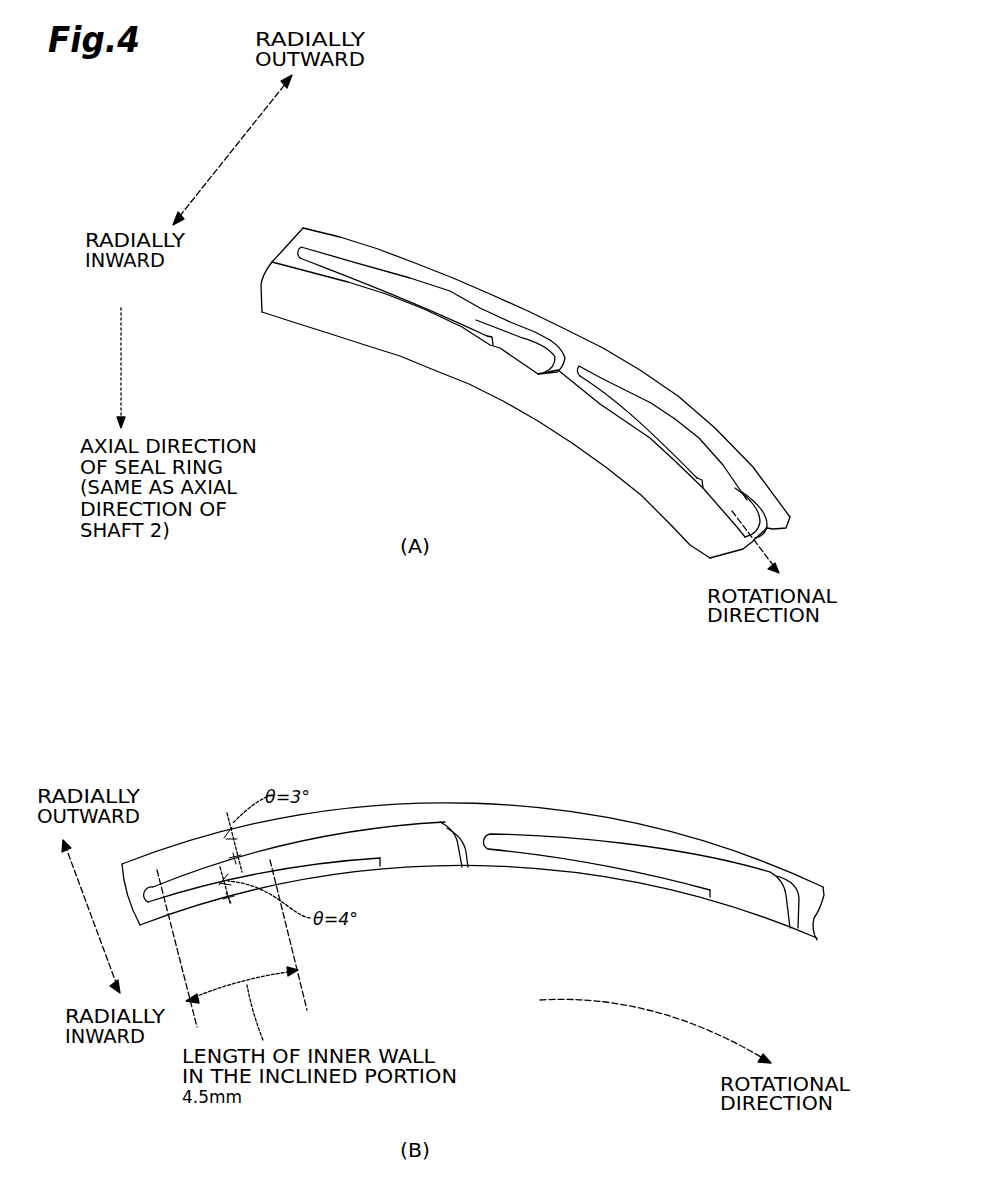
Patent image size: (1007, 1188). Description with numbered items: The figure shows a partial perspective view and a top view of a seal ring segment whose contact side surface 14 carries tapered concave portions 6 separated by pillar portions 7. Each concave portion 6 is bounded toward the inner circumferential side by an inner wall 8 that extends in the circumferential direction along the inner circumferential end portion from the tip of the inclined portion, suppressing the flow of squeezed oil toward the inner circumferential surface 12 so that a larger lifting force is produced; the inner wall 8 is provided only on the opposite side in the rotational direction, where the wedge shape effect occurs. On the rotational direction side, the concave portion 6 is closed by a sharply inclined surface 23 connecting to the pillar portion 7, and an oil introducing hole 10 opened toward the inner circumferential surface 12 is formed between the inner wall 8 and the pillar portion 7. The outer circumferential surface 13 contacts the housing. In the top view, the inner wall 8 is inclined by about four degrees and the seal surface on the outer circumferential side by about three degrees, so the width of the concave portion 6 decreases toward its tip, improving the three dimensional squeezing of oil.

The concave portion 6 is at (490, 310).
The pillar portion 7 is at (297, 238).
The inner wall 8 is at (427, 306).
The oil introducing hole 10 is at (508, 361).
The inner circumferential surface 12 is at (337, 313).
The outer circumferential surface 13 is at (363, 240).
The contact side surface 14 is at (587, 363).
The sharply inclined surface 23 is at (570, 337).